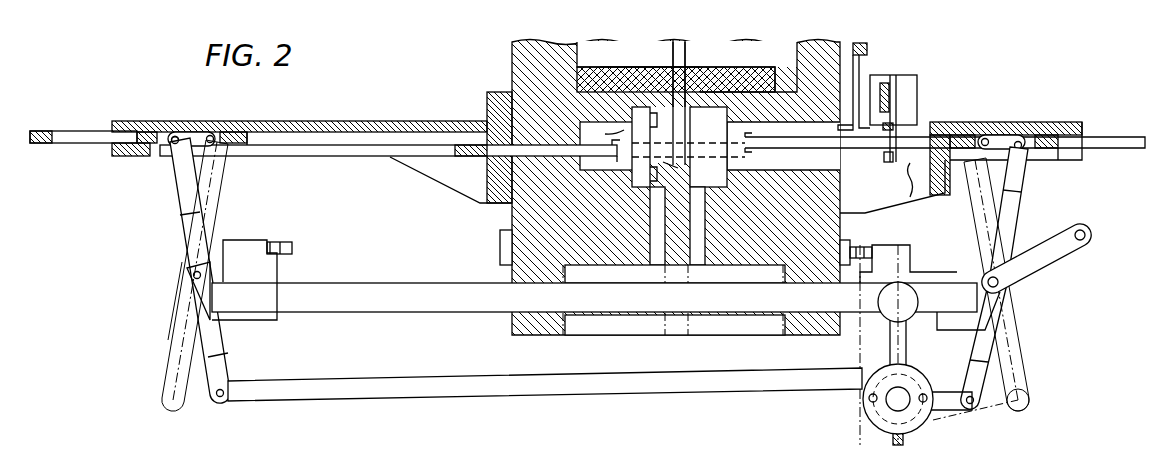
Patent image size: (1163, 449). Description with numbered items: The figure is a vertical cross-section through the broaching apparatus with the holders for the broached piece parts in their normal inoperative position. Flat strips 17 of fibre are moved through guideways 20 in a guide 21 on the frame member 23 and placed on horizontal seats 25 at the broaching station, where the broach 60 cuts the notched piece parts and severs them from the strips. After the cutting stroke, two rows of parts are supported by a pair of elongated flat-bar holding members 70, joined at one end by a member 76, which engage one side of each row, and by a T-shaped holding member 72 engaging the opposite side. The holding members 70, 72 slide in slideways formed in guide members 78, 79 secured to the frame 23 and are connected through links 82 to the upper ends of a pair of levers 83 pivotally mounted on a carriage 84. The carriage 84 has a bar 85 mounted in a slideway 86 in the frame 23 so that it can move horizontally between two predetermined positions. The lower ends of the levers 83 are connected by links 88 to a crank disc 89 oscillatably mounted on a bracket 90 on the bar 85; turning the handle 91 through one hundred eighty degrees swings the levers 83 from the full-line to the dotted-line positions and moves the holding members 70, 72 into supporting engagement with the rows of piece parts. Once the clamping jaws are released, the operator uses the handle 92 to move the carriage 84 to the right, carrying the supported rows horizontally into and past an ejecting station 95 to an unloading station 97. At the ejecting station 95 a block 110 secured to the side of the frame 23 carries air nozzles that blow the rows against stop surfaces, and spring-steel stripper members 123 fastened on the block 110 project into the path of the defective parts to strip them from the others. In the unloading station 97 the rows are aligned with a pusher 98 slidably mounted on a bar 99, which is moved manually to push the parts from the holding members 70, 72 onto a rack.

The flat strip 17 is at (686, 53).
The guideway 20 is at (672, 65).
The guide 21 is at (650, 85).
The frame member 23 is at (615, 268).
The horizontal seat 25 is at (656, 158).
The broach 60 is at (606, 129).
The holding member 70 is at (600, 140).
The holding member 72 is at (770, 145).
The connecting member 76 is at (36, 130).
The guide member 78 is at (235, 121).
The guide member 79 is at (1046, 122).
The link 82 is at (188, 130).
The lever 83 is at (183, 188).
The carriage 84 is at (155, 343).
The bar 85 is at (390, 312).
The slideway 86 is at (522, 308).
The link 88 is at (546, 380).
The crank disc 89 is at (862, 412).
The bracket 90 is at (895, 352).
The handle 91 is at (920, 285).
The handle 92 is at (1092, 222).
The ejecting station 95 is at (860, 158).
The unloading station 97 is at (892, 94).
The pusher 98 is at (894, 124).
The bar 99 is at (898, 80).
The block 110 is at (860, 75).
The stripper member 123 is at (868, 50).